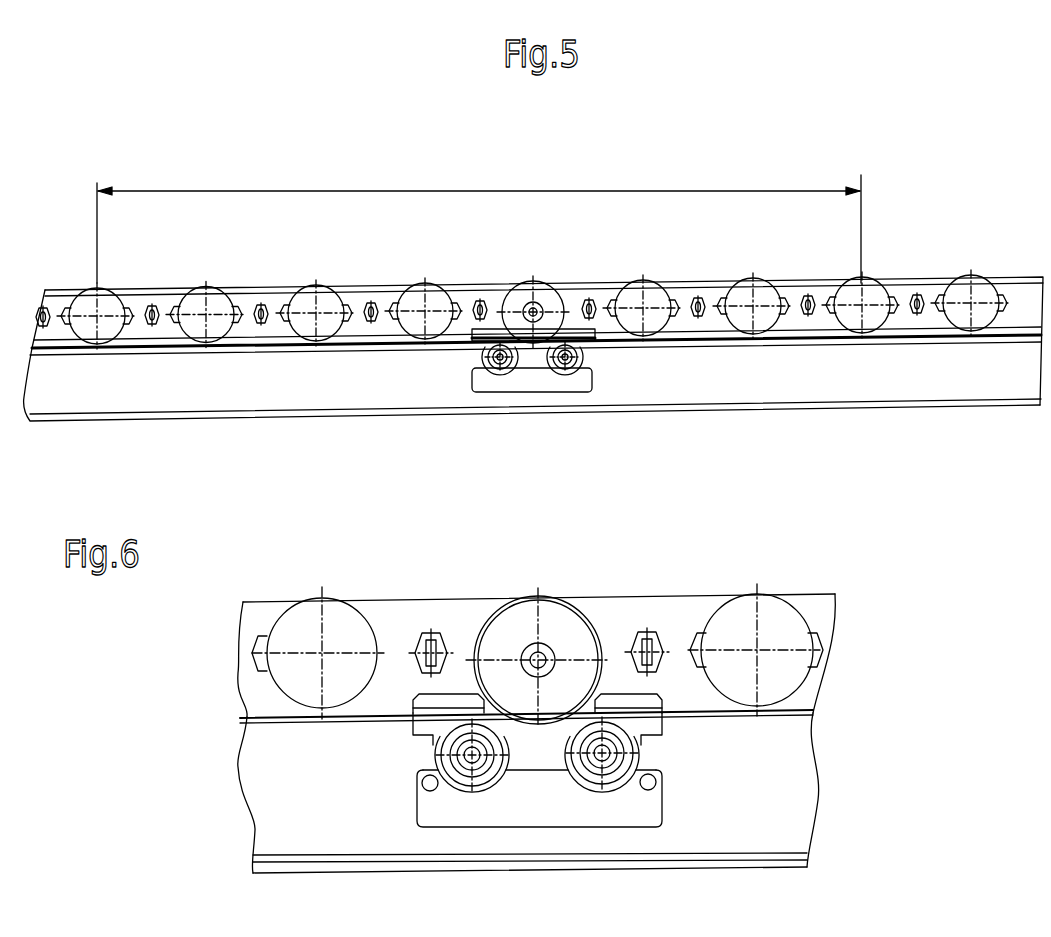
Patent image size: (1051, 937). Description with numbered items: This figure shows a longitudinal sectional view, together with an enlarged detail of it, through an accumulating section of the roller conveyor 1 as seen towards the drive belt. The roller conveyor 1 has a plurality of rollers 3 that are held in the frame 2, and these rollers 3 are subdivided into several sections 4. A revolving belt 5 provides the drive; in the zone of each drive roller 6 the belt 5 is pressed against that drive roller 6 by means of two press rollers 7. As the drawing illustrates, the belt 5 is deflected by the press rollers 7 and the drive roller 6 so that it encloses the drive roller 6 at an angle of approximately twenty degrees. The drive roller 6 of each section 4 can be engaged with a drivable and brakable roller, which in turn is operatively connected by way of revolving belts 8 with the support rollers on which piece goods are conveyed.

In FIG. 5, the roller conveyor 1 is at (882, 232).
In FIG. 5, the frame 2 is at (912, 279).
In FIG. 6, the frame 2 is at (822, 613).
In FIG. 5, the rollers 3 is at (312, 286).
In FIG. 6, the rollers 3 is at (766, 620).
In FIG. 5, the sections 4 is at (468, 190).
In FIG. 5, the revolving belt 5 is at (357, 345).
In FIG. 6, the revolving belt 5 is at (291, 720).
In FIG. 5, the drive roller 6 is at (545, 282).
In FIG. 6, the drive roller 6 is at (517, 638).
In FIG. 5, the press rollers 7 is at (488, 378).
In FIG. 6, the press rollers 7 is at (436, 748).
In FIG. 5, the revolving belts 8 is at (143, 285).
In FIG. 6, the revolving belts 8 is at (539, 652).